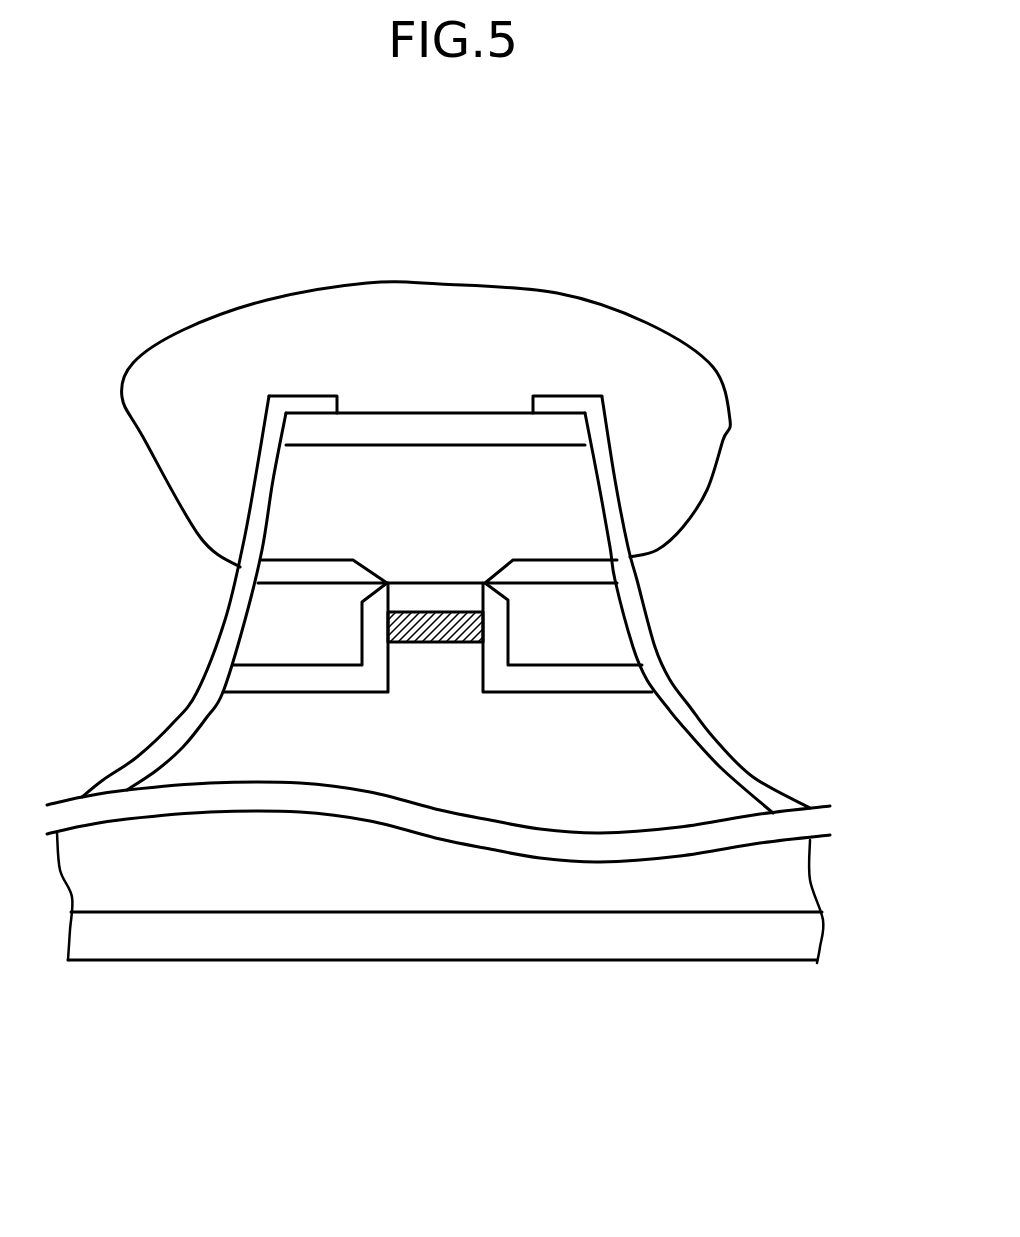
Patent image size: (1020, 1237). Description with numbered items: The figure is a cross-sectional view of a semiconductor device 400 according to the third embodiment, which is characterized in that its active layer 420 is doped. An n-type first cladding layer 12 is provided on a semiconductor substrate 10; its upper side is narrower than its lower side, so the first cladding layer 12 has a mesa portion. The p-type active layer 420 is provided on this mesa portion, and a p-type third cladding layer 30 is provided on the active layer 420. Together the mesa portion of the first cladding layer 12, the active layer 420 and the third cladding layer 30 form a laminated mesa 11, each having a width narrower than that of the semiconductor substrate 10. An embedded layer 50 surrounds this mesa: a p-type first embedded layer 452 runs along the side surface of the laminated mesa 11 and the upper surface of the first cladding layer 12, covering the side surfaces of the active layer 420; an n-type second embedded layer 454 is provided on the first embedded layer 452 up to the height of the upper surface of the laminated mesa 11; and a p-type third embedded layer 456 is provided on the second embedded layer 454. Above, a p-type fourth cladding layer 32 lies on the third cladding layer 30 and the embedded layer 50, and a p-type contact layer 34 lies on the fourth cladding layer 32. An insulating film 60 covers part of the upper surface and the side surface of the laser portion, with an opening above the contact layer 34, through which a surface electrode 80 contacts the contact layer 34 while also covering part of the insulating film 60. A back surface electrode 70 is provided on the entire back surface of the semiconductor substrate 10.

The semiconductor device 400 is at (80, 237).
The surface electrode 80 is at (435, 307).
The insulating film 60 is at (562, 403).
The contact layer 34 is at (563, 432).
The fourth cladding layer 32 is at (560, 498).
The third cladding layer 30 is at (470, 601).
The active layer 420 is at (470, 632).
The embedded layer 50 is at (613, 655).
The third embedded layer 456 is at (277, 573).
The second embedded layer 454 is at (277, 628).
The first embedded layer 452 is at (243, 677).
The first cladding layer 12 is at (690, 770).
The semiconductor substrate 10 is at (793, 882).
The back surface electrode 70 is at (607, 962).
The laminated mesa 11 is at (435, 662).